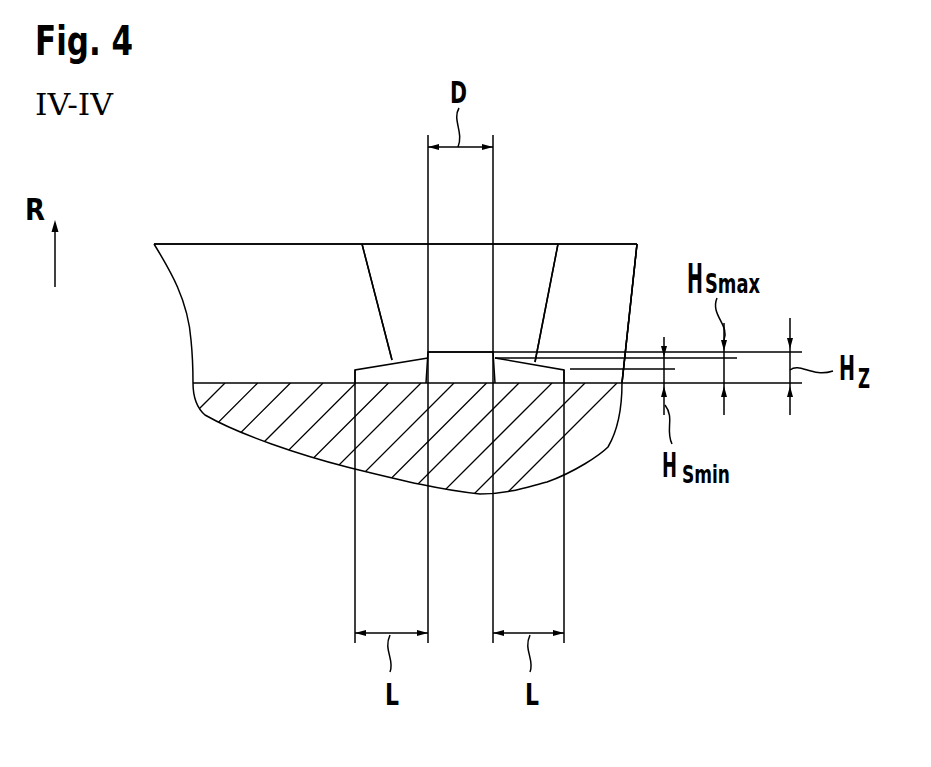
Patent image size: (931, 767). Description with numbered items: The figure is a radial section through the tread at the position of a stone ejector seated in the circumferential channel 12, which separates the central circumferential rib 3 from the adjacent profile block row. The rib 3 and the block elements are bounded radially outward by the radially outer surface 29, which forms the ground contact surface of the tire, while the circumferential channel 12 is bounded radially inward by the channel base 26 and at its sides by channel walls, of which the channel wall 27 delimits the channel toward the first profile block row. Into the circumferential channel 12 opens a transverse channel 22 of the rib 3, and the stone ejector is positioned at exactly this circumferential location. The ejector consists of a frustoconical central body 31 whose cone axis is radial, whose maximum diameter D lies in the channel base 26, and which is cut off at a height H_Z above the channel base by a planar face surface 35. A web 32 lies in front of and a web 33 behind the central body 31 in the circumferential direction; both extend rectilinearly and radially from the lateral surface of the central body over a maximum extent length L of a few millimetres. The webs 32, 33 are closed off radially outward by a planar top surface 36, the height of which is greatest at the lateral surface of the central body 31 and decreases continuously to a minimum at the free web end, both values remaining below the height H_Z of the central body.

The circumferential rib 3 is at (592, 244).
The circumferential channel 12 is at (309, 288).
The transverse channel 22 is at (455, 290).
The channel base 26 is at (325, 382).
The channel wall 27 is at (603, 278).
The radially outer surface 29 is at (222, 241).
The central body 31 is at (466, 364).
The web 32 is at (396, 370).
The web 33 is at (538, 372).
The planar face surface 35 is at (477, 350).
The planar top surface 36 is at (409, 359).